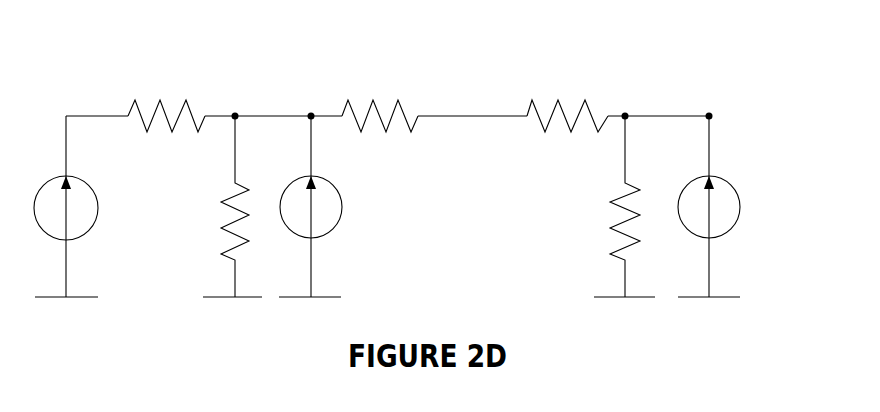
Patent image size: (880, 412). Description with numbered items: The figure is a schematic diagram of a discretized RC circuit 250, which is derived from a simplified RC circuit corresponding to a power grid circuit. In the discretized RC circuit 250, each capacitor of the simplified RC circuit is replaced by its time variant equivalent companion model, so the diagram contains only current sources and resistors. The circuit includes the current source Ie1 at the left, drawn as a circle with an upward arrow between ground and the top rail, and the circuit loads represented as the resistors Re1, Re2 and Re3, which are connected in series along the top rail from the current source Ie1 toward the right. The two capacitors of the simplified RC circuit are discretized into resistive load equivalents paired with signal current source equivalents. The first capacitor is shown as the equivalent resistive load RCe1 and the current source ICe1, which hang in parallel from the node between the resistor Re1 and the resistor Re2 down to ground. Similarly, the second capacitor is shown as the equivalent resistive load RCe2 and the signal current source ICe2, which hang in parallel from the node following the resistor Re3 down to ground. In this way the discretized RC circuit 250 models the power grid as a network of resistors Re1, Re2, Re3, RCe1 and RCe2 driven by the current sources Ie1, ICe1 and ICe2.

The discretized RC circuit 250 is at (188, 36).
The resistor Re1 is at (166, 96).
The resistor Re2 is at (380, 96).
The resistor Re3 is at (567, 96).
The current source Ie1 is at (85, 206).
The equivalent resistive load RCe1 is at (215, 206).
The current source ICe1 is at (332, 206).
The equivalent resistive load RCe2 is at (606, 206).
The signal current source ICe2 is at (731, 206).